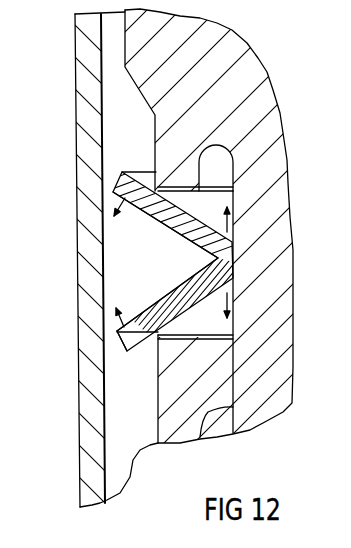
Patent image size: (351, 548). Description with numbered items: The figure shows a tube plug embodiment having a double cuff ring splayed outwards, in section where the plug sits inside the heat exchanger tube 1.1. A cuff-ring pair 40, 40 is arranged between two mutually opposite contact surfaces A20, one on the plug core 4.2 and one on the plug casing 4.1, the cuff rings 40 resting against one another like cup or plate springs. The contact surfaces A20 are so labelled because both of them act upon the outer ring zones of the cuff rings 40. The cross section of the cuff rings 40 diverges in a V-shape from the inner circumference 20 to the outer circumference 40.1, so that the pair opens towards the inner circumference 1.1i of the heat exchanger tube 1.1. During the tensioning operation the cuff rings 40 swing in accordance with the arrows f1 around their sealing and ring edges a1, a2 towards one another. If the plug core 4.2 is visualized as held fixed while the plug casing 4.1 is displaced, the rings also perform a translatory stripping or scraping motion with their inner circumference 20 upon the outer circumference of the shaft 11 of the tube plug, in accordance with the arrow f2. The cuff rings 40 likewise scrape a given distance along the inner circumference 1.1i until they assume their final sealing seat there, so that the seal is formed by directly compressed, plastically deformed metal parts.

The shaft 11 is at (280, 272).
The plug core 4.2 is at (233, 48).
The plug casing 4.1 is at (180, 422).
The sealing and ring edge a2 is at (178, 198).
The sealing and ring edge a1 is at (165, 332).
The heat exchanger tube 1.1 is at (80, 394).
The inner circumference of the heat exchanger tube 1.1i is at (108, 393).
The inner circumference 20 is at (233, 243).
The outer circumference 40.1 is at (118, 351).
The cuff ring 40 is at (157, 223).
The contact surface A20 is at (158, 175).
The swinging motion arrow f1 is at (122, 200).
The scraping motion arrow f2 is at (233, 223).